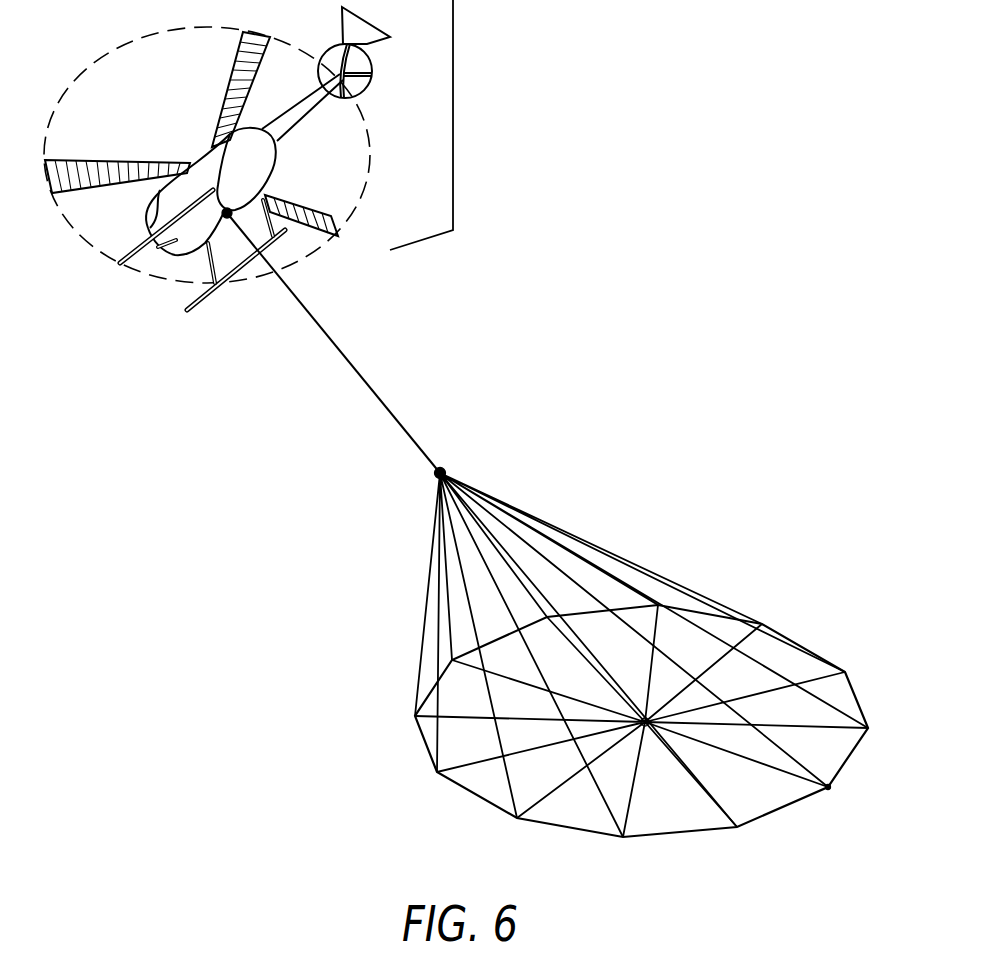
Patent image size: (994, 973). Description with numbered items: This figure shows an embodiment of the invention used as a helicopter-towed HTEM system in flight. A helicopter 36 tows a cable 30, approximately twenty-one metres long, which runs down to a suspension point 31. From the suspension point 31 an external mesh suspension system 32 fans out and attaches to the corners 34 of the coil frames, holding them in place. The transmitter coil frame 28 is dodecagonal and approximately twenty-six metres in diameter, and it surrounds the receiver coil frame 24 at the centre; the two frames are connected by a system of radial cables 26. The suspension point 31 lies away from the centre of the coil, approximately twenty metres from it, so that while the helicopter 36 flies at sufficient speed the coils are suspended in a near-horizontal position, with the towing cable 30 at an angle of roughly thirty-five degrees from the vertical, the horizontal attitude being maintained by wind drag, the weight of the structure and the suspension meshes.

The receiver coil frame 24 is at (624, 746).
The radial cables 26 is at (557, 790).
The transmitter coil frame 28 is at (473, 800).
The cable 30 is at (372, 383).
The suspension point 31 is at (444, 464).
The external mesh suspension system 32 is at (552, 520).
The corners 34 is at (830, 788).
The helicopter 36 is at (453, 122).